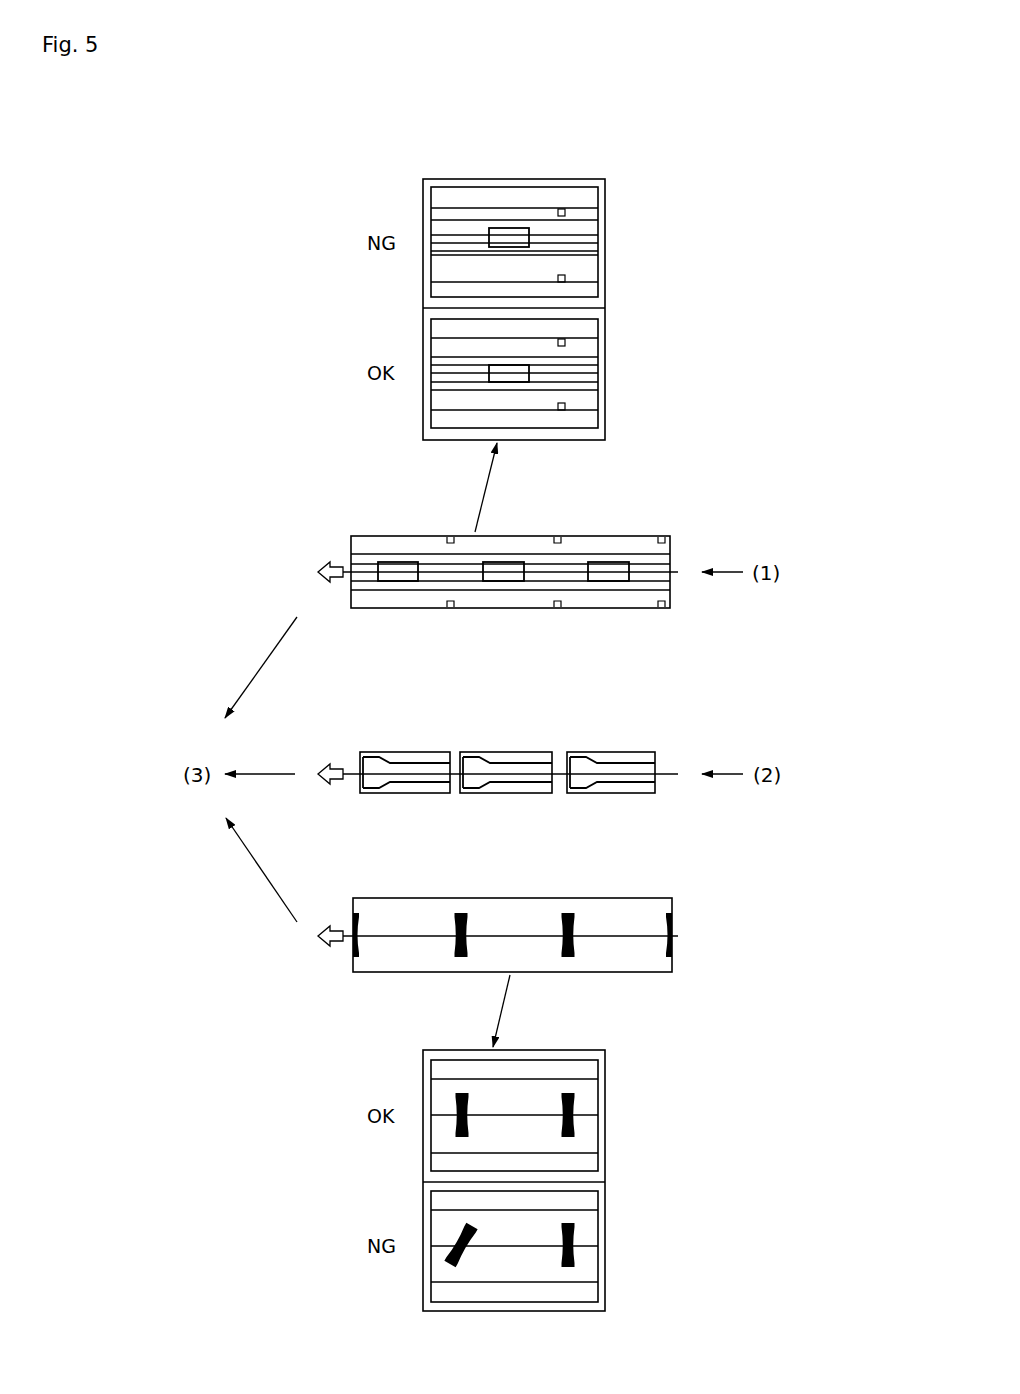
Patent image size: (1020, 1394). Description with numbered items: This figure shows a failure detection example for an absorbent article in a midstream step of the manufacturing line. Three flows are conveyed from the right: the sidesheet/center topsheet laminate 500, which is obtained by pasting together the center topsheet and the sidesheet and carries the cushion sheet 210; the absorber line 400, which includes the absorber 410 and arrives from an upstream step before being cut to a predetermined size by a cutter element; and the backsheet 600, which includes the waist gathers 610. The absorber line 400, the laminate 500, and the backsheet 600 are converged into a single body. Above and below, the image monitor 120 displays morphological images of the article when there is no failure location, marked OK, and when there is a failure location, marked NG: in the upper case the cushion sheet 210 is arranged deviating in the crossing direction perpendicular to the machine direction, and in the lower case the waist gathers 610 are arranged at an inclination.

The image monitor 120 is at (598, 178).
The cushion sheet 210 is at (512, 218).
The sidesheet/center topsheet laminate 500 is at (639, 540).
The absorber line 400 is at (650, 752).
The absorber 410 is at (606, 757).
The backsheet 600 is at (636, 907).
The waist gathers 610 is at (575, 925).